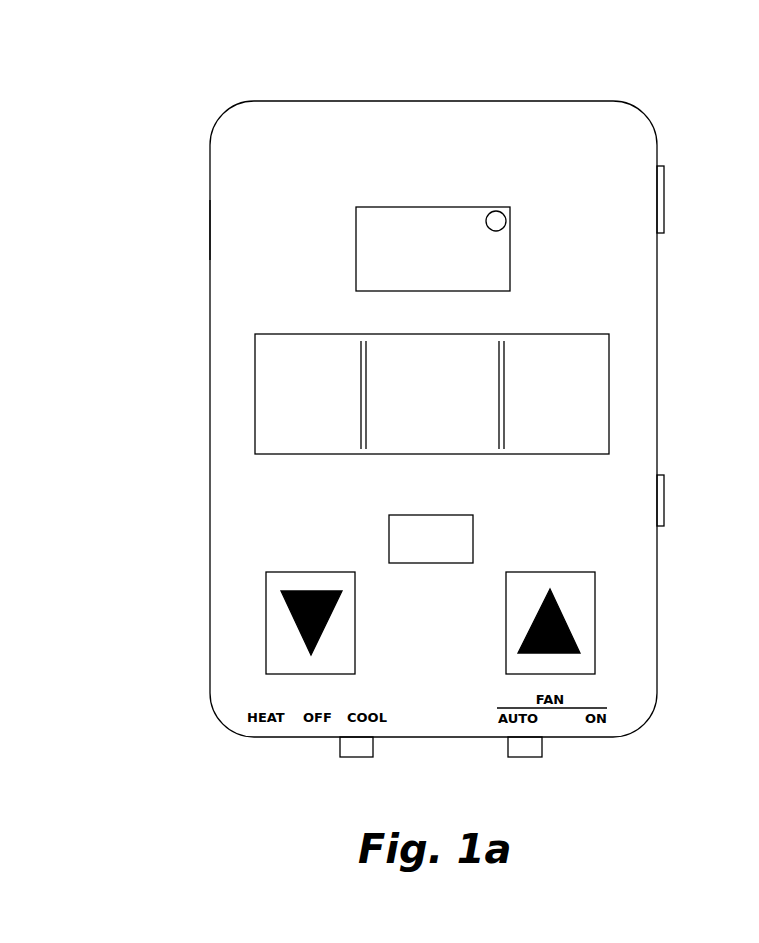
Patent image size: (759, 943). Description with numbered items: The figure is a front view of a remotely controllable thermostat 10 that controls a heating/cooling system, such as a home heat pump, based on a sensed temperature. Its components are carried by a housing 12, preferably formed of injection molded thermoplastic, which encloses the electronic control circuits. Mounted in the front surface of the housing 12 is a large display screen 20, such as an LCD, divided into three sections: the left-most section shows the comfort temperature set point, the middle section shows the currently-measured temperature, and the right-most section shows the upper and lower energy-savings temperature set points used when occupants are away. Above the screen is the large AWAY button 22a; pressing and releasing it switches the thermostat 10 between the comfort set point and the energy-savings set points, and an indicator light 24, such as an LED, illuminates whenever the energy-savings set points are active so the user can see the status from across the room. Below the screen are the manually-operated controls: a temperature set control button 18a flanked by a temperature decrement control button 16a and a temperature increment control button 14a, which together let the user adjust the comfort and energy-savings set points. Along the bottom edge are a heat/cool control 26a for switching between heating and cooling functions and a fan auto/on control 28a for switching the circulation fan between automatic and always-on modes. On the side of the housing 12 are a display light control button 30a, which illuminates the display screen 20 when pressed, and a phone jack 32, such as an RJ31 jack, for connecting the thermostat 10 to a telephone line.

The thermostat 10 is at (662, 94).
The housing 12 is at (210, 222).
The temperature increment control button 14a is at (565, 572).
The temperature decrement control button 16a is at (281, 572).
The temperature set control button 18a is at (389, 545).
The display screen 20 is at (322, 334).
The AWAY button 22a is at (357, 228).
The indicator light 24 is at (490, 213).
The heat/cool control 26a is at (340, 757).
The fan auto/on control 28a is at (508, 757).
The display light control button 30a is at (667, 497).
The phone jack 32 is at (664, 201).